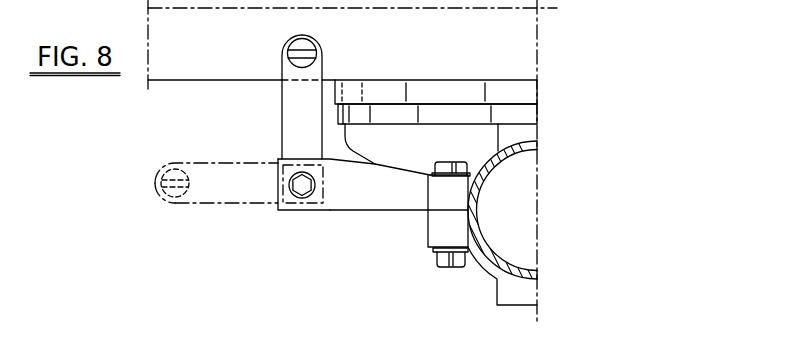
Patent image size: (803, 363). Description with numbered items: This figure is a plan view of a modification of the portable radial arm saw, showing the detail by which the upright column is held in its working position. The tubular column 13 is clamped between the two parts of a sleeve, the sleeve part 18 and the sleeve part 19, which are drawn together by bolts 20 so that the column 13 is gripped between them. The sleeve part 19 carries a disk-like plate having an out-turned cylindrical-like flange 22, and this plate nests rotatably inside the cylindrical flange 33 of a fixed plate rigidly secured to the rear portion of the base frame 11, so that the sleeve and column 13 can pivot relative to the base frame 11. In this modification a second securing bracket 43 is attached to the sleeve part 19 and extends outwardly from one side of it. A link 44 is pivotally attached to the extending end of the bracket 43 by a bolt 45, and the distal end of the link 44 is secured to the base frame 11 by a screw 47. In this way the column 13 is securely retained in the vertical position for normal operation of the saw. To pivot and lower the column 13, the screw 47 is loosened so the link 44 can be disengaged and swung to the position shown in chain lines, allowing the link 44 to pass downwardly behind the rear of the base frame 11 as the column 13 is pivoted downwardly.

The base frame 11 is at (195, 80).
The column 13 is at (500, 167).
The sleeve part 18 is at (443, 230).
The sleeve part 19 is at (447, 193).
The bolts 20 is at (462, 270).
The cylindrical-like flange 22 is at (523, 113).
The cylindrical flange 33 is at (520, 93).
The second securing bracket 43 is at (357, 192).
The link 44 is at (298, 110).
The bolt 45 is at (313, 188).
The screw 47 is at (296, 50).